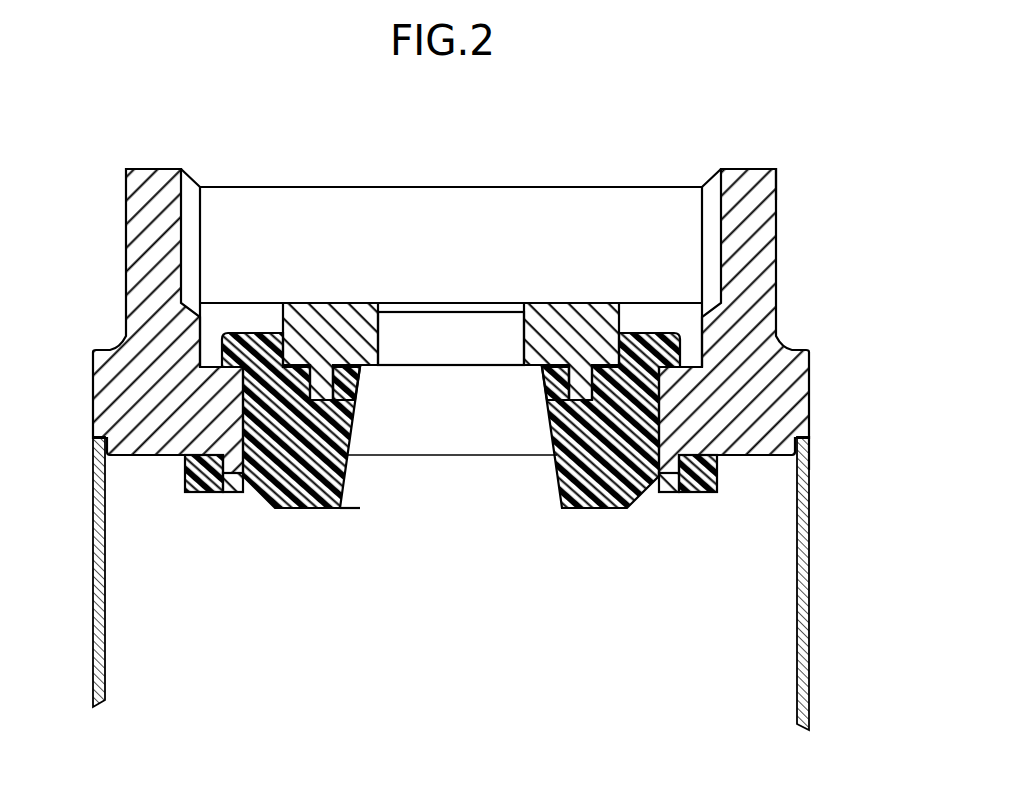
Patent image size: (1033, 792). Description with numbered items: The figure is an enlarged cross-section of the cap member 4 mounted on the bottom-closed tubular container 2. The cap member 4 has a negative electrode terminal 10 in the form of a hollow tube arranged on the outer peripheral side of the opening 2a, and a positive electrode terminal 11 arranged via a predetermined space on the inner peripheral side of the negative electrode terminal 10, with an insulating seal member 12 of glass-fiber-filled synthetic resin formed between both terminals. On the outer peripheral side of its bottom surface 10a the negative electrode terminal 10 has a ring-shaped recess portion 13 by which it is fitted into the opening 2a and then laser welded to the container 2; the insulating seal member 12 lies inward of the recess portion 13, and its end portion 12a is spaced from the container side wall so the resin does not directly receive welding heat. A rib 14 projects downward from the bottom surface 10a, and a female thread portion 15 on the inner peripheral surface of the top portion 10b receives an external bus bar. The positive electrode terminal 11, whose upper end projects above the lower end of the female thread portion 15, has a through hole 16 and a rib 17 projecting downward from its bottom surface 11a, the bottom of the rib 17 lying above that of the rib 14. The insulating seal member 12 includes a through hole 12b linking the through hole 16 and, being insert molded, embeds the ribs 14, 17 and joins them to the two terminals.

The bottom-closed tubular container 2 is at (93, 593).
The opening 2a is at (818, 430).
The cap member 4 is at (488, 409).
The negative electrode terminal 10 is at (498, 356).
The bottom surface 10a is at (758, 456).
The top portion 10b is at (747, 168).
The positive electrode terminal 11 is at (541, 262).
The bottom surface 11a is at (363, 367).
The insulating seal member 12 is at (576, 512).
The end portion 12a is at (190, 493).
The through hole 12b is at (350, 511).
The ring-shaped recess portion 13 is at (123, 472).
The rib 14 is at (248, 490).
The female thread portion 15 is at (702, 228).
The through hole 16 is at (380, 335).
The rib 17 is at (356, 402).